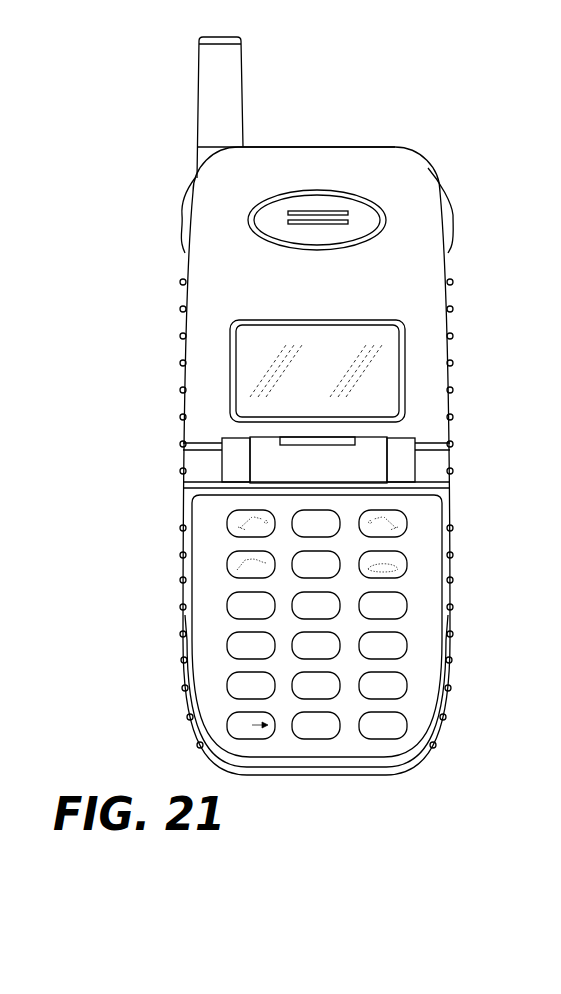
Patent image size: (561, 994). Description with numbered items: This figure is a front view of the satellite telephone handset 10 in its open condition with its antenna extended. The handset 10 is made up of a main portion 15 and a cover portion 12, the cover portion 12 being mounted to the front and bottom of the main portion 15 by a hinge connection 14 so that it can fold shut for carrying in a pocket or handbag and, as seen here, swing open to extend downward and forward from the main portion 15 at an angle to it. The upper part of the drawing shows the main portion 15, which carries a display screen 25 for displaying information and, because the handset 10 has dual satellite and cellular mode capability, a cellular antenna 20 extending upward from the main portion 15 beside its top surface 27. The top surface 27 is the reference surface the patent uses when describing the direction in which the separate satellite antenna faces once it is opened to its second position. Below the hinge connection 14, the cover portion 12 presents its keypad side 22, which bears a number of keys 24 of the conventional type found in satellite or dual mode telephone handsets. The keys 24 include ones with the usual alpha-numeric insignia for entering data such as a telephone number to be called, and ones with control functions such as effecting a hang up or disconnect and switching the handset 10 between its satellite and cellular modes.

The satellite telephone handset 10 is at (426, 137).
The cover portion 12 is at (450, 570).
The hinge connection 14 is at (403, 465).
The main portion 15 is at (437, 400).
The cellular antenna 20 is at (230, 99).
The keypad side 22 is at (386, 624).
The keys 24 is at (403, 686).
The display screen 25 is at (388, 358).
The top surface 27 is at (333, 147).